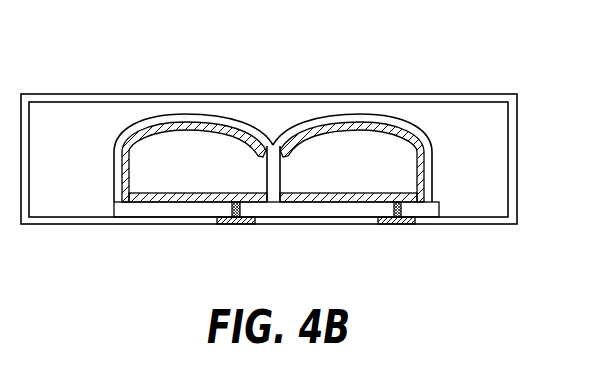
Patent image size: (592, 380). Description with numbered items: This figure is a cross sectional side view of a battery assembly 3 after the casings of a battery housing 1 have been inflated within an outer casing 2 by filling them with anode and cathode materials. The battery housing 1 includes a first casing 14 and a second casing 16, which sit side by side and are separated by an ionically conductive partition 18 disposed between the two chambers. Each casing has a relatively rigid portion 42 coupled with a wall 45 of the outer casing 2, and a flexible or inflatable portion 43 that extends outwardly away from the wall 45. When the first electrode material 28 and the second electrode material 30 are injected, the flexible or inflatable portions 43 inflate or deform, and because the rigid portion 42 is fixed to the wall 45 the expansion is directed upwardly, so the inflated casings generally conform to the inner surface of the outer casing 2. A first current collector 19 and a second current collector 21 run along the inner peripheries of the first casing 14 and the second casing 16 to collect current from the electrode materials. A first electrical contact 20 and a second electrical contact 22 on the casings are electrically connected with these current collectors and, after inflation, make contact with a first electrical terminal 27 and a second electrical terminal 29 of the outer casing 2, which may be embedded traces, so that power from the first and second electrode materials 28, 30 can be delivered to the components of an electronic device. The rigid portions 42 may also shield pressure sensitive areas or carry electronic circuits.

The battery housing 1 is at (452, 180).
The outer casing 2 is at (508, 97).
The battery assembly 3 is at (117, 43).
The first casing 14 is at (138, 128).
The second casing 16 is at (413, 133).
The ionically conductive partition 18 is at (278, 190).
The first current collector 19 is at (178, 120).
The first electrical contact 20 is at (243, 208).
The second current collector 21 is at (380, 130).
The second electrical contact 22 is at (402, 210).
The first electrical terminal 27 is at (230, 225).
The first electrode material 28 is at (183, 178).
The second electrical terminal 29 is at (407, 225).
The second electrode material 30 is at (357, 176).
The rigid portion 42 is at (150, 210).
The flexible or inflatable portion 43 is at (330, 119).
The wall 45 is at (68, 224).